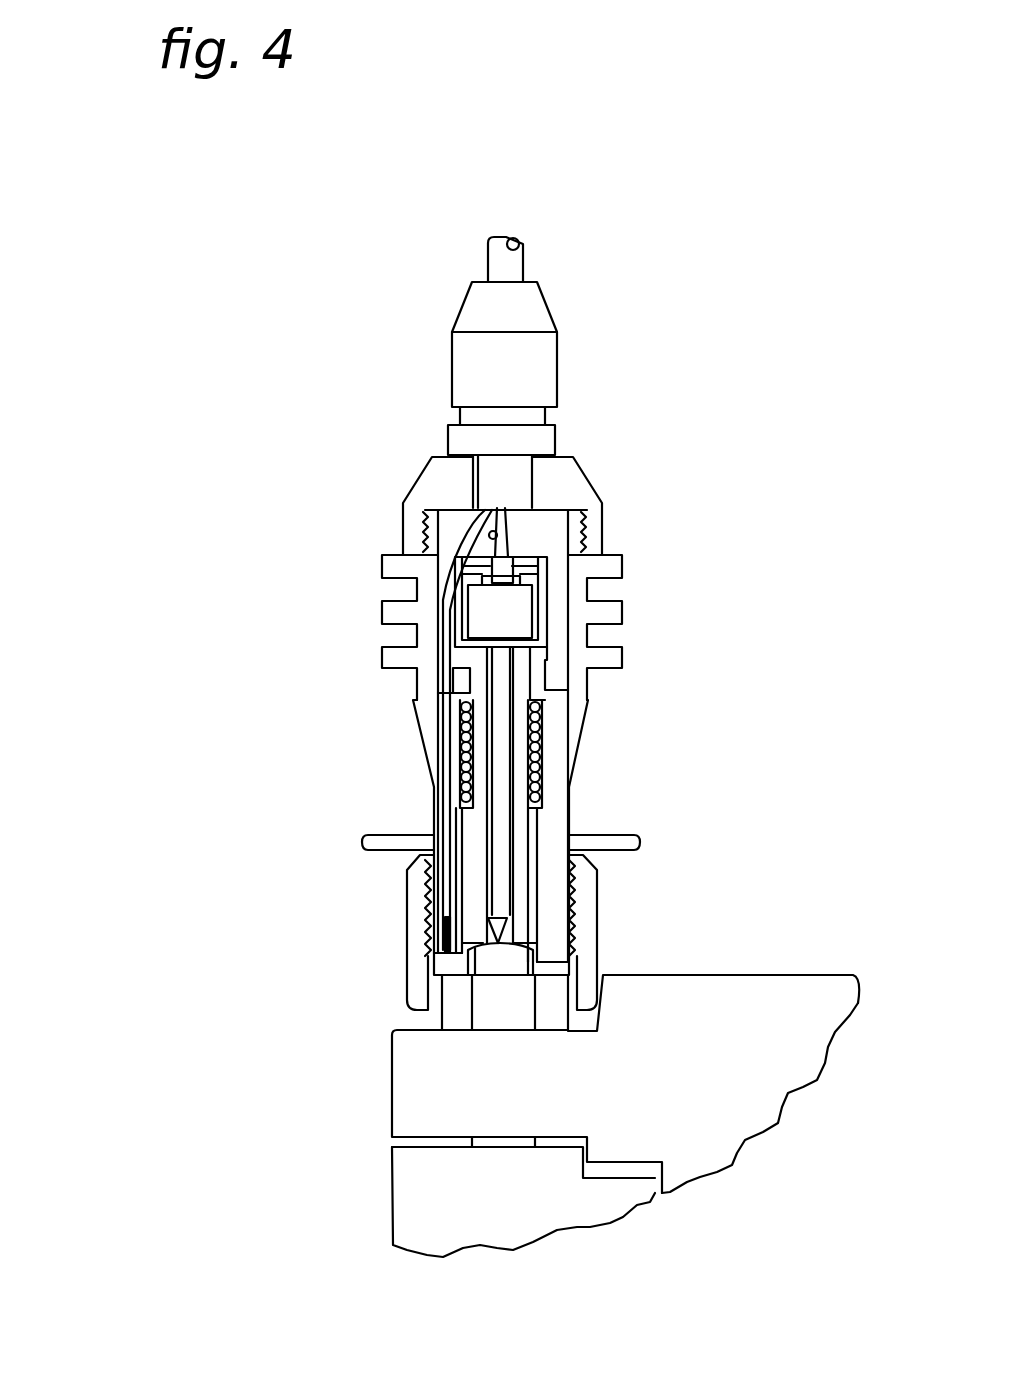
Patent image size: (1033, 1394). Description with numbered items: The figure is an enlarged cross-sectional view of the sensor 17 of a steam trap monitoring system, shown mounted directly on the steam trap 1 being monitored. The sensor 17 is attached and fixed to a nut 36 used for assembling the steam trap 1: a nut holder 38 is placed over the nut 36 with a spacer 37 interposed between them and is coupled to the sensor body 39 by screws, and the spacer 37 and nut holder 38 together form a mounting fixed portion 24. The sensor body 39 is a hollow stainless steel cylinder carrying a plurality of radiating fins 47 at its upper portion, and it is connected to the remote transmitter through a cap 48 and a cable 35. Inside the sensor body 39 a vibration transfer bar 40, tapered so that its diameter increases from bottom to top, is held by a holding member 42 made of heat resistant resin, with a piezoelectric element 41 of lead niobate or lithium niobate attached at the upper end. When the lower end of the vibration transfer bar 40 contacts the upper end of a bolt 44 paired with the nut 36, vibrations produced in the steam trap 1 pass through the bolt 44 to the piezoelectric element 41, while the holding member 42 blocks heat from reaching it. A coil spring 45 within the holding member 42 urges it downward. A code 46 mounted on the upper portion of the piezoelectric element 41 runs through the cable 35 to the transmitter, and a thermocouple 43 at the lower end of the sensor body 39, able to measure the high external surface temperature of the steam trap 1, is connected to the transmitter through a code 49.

The steam trap 1 is at (450, 1088).
The sensor 17 is at (628, 390).
The mounting fixed portion 24 is at (266, 901).
The cable 35 is at (503, 262).
The nut 36 is at (492, 1006).
The spacer 37 is at (434, 1000).
The nut holder 38 is at (587, 908).
The sensor body 39 is at (573, 742).
The vibration transfer bar 40 is at (512, 830).
The piezoelectric element 41 is at (480, 610).
The holding member 42 is at (443, 808).
The thermocouple 43 is at (445, 937).
The bolt 44 is at (513, 967).
The coil spring 45 is at (540, 725).
The code 46 is at (503, 540).
The radiating fins 47 is at (608, 658).
The cap 48 is at (438, 482).
The code 49 is at (445, 655).